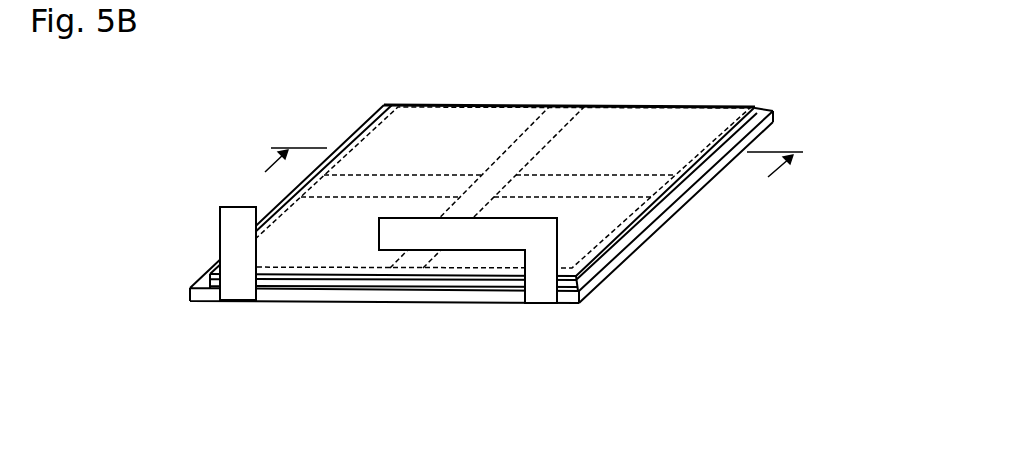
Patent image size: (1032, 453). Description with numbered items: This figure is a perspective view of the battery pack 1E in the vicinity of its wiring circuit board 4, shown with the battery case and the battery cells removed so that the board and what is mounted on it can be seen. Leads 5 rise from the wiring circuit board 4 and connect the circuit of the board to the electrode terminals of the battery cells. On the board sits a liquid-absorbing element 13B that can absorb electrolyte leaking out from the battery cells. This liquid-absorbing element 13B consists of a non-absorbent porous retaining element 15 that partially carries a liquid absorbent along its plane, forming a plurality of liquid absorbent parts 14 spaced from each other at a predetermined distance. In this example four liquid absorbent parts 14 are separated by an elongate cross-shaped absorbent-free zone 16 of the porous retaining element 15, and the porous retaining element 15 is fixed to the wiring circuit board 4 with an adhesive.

The battery pack 1E is at (166, 140).
The wiring circuit board 4 is at (188, 295).
The leads 5 is at (220, 227).
The liquid-absorbing element 13B is at (717, 105).
The liquid absorbent parts 14 is at (445, 122).
The porous retaining element 15 is at (687, 108).
The absorbent-free zone 16 is at (558, 122).